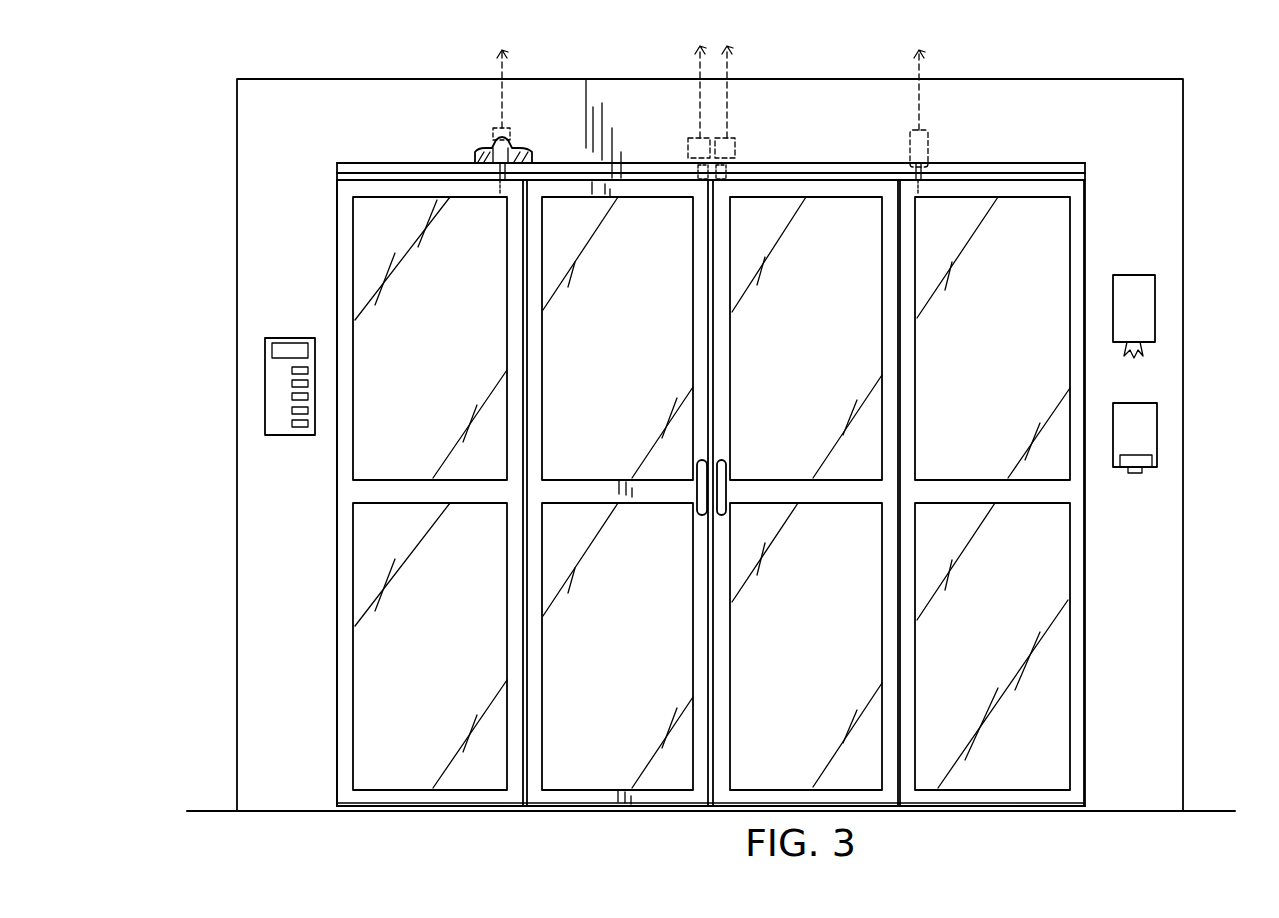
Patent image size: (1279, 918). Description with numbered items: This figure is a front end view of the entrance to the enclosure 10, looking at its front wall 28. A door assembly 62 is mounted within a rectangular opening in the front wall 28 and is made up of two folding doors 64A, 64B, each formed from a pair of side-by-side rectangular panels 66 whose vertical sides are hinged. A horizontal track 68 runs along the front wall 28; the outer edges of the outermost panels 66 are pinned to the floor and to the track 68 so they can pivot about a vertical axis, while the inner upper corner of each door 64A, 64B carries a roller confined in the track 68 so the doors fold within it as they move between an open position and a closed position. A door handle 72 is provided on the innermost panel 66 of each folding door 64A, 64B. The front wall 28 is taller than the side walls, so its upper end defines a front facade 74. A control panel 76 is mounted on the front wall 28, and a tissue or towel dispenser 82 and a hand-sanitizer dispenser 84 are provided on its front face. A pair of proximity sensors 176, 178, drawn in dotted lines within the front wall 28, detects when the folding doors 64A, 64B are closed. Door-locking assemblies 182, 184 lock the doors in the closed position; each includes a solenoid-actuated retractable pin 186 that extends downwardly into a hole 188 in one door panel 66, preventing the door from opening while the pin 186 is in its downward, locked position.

The enclosure 10 is at (202, 134).
The front wall 28 is at (1128, 88).
The door assembly 62 is at (800, 183).
The folding door 64A is at (418, 182).
The folding door 64B is at (998, 184).
The rectangular panels 66 is at (413, 752).
The horizontal track 68 is at (976, 170).
The door handle 72 is at (720, 492).
The front facade 74 is at (765, 76).
The control panel 76 is at (281, 425).
The tissue or towel dispenser 82 is at (1147, 310).
The hand-sanitizer dispenser 84 is at (1147, 427).
The proximity sensor 176 is at (690, 146).
The proximity sensor 178 is at (736, 148).
The door-locking assembly 182 is at (514, 136).
The door-locking assembly 184 is at (934, 138).
The retractable pin 186 is at (499, 165).
The hole 188 is at (506, 185).